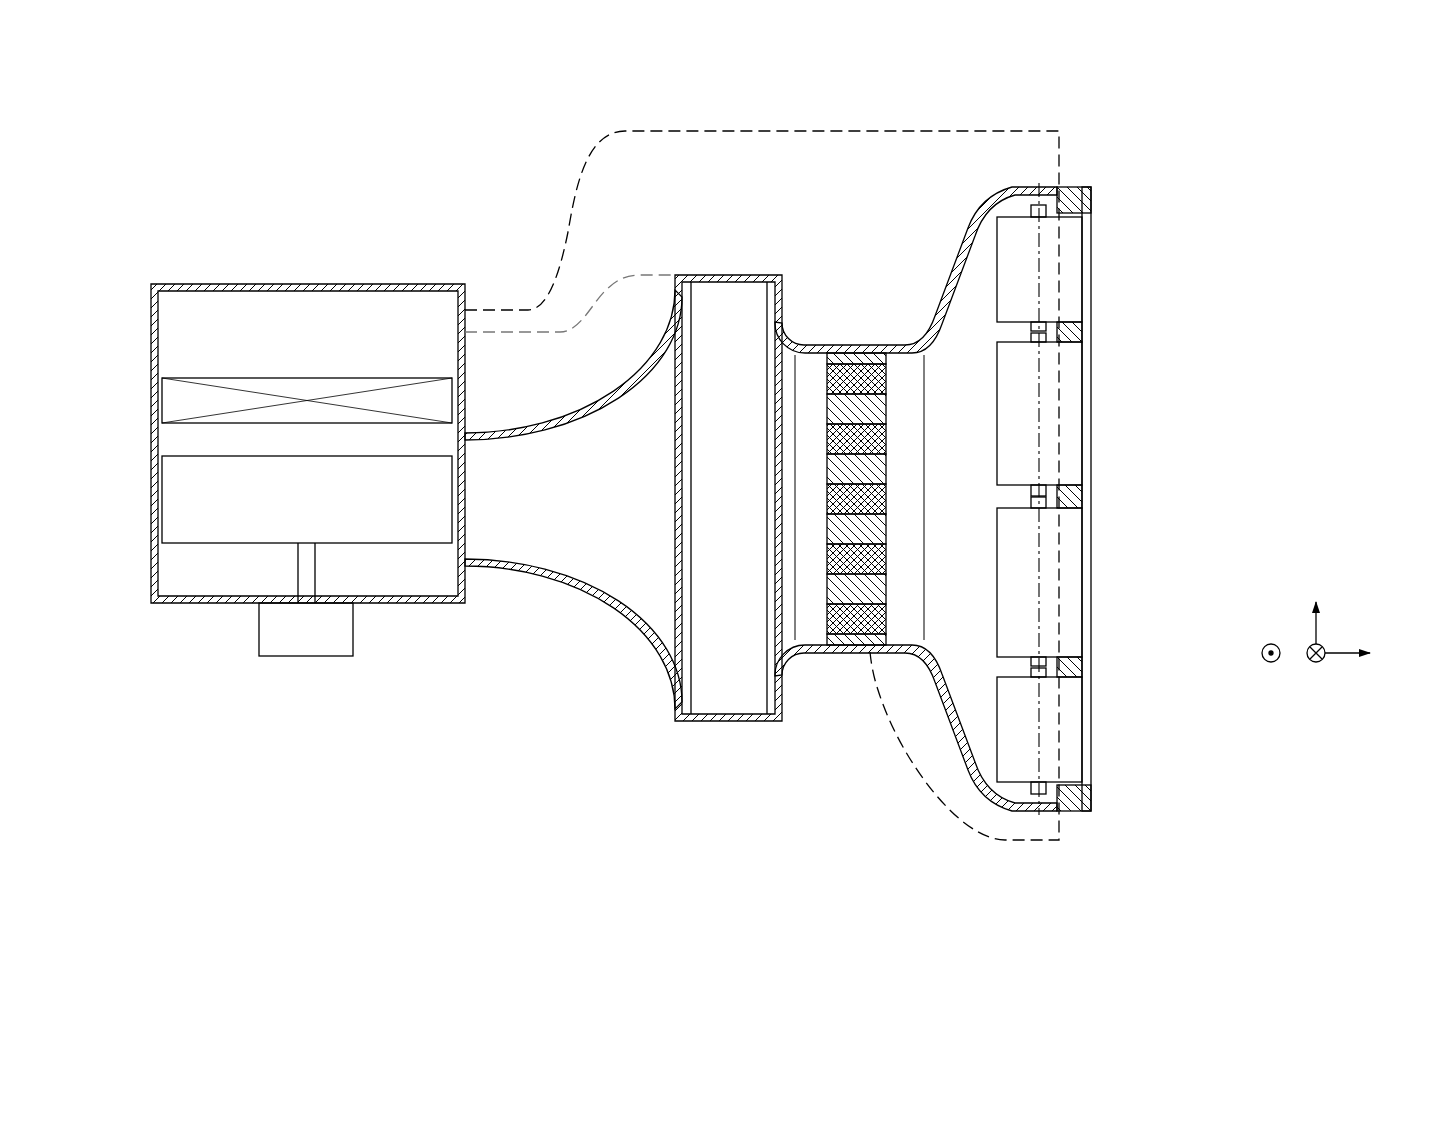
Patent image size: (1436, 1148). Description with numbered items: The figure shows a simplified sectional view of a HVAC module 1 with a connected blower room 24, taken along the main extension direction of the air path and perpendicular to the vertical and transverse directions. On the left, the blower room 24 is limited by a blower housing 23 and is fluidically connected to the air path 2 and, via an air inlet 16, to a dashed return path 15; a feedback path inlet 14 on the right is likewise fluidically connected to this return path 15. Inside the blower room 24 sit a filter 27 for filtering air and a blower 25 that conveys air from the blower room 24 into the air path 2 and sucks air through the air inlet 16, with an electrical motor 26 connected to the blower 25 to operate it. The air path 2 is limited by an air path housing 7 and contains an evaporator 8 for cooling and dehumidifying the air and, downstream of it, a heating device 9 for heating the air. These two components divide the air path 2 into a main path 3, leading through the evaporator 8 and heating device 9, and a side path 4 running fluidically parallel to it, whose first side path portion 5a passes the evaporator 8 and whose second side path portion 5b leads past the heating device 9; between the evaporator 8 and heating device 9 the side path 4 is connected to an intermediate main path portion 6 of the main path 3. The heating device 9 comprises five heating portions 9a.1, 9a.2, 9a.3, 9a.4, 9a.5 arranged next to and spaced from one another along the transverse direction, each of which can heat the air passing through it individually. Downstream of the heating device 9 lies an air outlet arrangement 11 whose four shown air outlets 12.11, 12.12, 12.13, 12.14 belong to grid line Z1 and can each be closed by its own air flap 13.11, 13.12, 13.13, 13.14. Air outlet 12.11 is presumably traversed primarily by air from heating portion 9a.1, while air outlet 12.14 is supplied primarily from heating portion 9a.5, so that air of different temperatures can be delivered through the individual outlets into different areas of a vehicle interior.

The HVAC module 1 is at (1210, 185).
The air path 2 is at (761, 525).
The main path 3 is at (573, 502).
The side path 4 is at (866, 525).
The first side path portion 5a is at (728, 569).
The second side path portion 5b is at (847, 668).
The intermediate main path portion 6 is at (810, 375).
The air path housing 7 is at (590, 608).
The evaporator 8 is at (726, 497).
The heating device 9 is at (909, 448).
The first heating portion 9a.1 is at (888, 378).
The second heating portion 9a.2 is at (888, 439).
The third heating portion 9a.3 is at (888, 494).
The fourth heating portion 9a.4 is at (888, 561).
The fifth heating portion 9a.5 is at (888, 618).
The air outlet arrangement 11 is at (1145, 499).
The air outlet 12.11 is at (1088, 265).
The air outlet 12.12 is at (1088, 395).
The air outlet 12.13 is at (1088, 565).
The air outlet 12.14 is at (1088, 710).
The air flap 13.11 is at (1070, 300).
The air flap 13.12 is at (1070, 432).
The air flap 13.13 is at (1070, 600).
The air flap 13.14 is at (1070, 745).
The feedback path inlet 14 is at (1062, 236).
The return path 15 is at (786, 216).
The air inlet 16 is at (470, 322).
The blower housing 23 is at (178, 616).
The blower room 24 is at (293, 341).
The blower 25 is at (293, 506).
The electrical motor 26 is at (293, 641).
The filter 27 is at (362, 383).
The grid line Z1 is at (1070, 855).